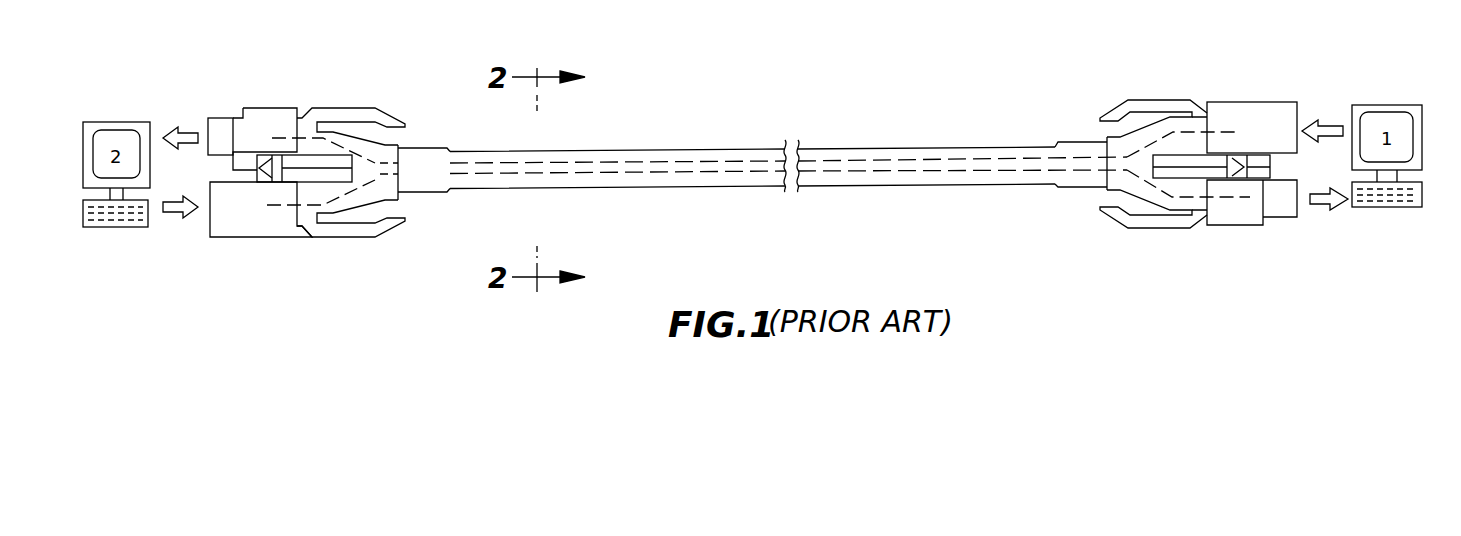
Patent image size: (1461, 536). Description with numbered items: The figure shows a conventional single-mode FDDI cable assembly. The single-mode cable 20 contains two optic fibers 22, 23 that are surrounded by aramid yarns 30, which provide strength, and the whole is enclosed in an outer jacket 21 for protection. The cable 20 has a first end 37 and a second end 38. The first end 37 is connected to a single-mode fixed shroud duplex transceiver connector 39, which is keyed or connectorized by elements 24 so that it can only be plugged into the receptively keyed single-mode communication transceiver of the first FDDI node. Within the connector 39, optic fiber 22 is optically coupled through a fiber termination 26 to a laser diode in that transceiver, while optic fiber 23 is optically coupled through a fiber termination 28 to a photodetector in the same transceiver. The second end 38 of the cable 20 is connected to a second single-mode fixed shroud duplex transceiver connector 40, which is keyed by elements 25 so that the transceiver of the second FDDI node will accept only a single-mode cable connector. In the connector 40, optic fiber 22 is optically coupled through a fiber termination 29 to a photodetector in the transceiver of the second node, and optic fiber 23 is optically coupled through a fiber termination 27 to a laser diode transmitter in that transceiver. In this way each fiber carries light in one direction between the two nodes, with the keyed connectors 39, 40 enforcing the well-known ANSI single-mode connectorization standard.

The single-mode cable 20 is at (595, 134).
The outer jacket 21 is at (587, 188).
The optic fiber 22 is at (912, 150).
The optic fiber 23 is at (913, 183).
The elements 24 is at (1113, 110).
The elements 25 is at (390, 112).
The fiber termination 26 is at (1222, 108).
The fiber termination 27 is at (228, 231).
The fiber termination 28 is at (1235, 218).
The fiber termination 29 is at (262, 116).
The aramid yarns 30 is at (685, 153).
The first end 37 is at (1065, 190).
The second end 38 is at (450, 192).
The single-mode fixed shroud duplex transceiver connector 39 is at (1277, 233).
The single-mode fixed shroud duplex transceiver connector 40 is at (289, 255).